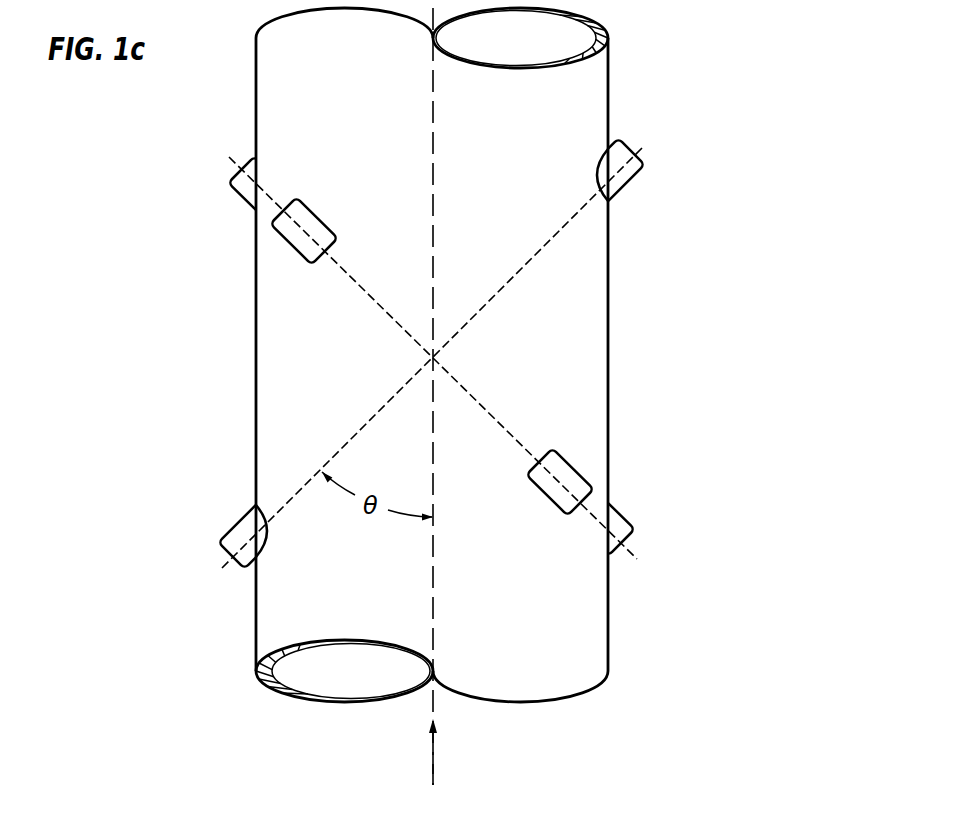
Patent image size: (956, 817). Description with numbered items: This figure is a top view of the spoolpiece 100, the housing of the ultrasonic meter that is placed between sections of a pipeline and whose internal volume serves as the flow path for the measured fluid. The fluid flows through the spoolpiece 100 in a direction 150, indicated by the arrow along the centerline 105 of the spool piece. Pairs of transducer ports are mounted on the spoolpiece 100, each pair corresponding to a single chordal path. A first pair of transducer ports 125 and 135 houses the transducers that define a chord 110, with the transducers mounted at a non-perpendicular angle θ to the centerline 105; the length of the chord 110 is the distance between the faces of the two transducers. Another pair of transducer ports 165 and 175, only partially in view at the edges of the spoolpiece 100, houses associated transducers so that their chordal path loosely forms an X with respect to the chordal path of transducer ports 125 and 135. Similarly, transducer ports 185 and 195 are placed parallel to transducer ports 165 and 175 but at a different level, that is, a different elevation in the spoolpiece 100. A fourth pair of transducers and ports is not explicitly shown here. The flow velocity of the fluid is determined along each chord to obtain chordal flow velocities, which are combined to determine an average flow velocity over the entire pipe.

The spoolpiece 100 is at (608, 55).
The centerline 105 is at (433, 108).
The path (chord) 110 is at (487, 303).
The transducer port 125 is at (633, 183).
The transducer port 135 is at (244, 515).
The flow direction 150 is at (433, 762).
The transducer port 165 is at (243, 198).
The transducer port 175 is at (623, 512).
The transducer port 185 is at (309, 207).
The transducer port 195 is at (548, 497).